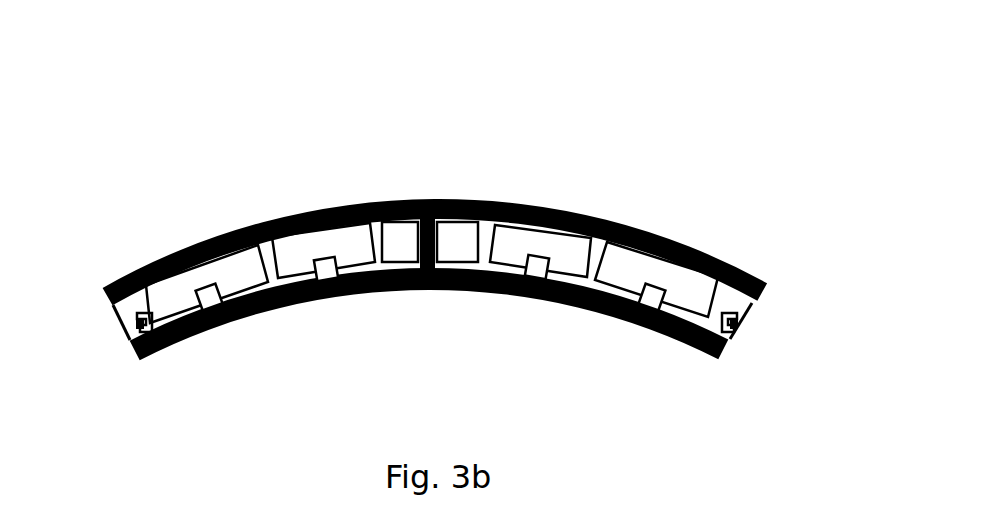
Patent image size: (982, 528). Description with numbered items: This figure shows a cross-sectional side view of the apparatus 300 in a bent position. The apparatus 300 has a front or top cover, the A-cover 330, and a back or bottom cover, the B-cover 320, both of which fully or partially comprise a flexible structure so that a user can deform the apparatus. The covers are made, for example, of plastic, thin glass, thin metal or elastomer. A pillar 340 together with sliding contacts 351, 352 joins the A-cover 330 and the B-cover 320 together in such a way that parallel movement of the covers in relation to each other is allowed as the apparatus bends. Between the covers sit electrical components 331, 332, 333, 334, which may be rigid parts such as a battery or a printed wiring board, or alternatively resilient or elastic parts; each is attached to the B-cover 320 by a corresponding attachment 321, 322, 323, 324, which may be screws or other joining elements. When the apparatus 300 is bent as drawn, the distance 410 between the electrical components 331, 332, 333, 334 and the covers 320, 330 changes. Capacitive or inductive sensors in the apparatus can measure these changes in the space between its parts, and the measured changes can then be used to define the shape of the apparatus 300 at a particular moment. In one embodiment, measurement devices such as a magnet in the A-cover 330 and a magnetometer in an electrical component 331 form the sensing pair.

The apparatus 300 is at (688, 92).
The B-cover 320 is at (429, 348).
The attachment 321 is at (240, 345).
The attachment 322 is at (359, 315).
The attachment 323 is at (568, 314).
The attachment 324 is at (680, 343).
The A-cover 330 is at (435, 239).
The electrical component 331 is at (209, 251).
The electrical component 332 is at (327, 213).
The electrical component 333 is at (546, 210).
The electrical component 334 is at (662, 244).
The pillar 340 is at (462, 292).
The sliding contact 351 is at (116, 366).
The sliding contact 352 is at (762, 280).
The distance 410 is at (520, 219).